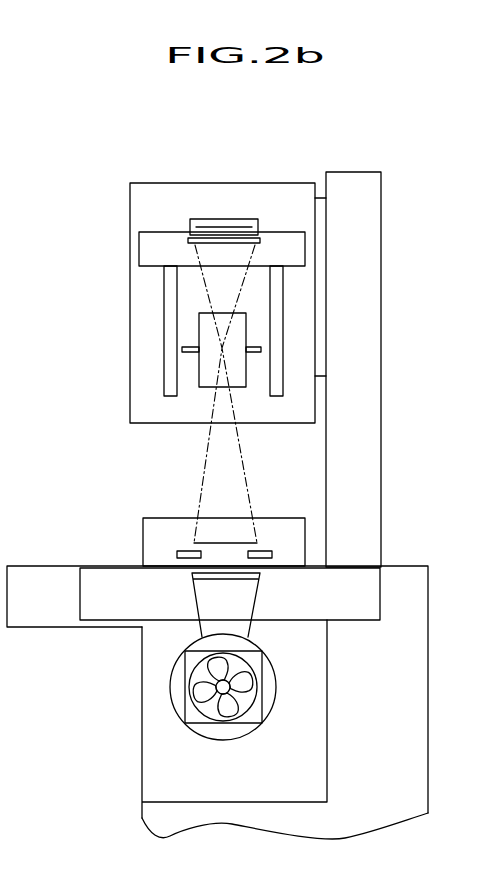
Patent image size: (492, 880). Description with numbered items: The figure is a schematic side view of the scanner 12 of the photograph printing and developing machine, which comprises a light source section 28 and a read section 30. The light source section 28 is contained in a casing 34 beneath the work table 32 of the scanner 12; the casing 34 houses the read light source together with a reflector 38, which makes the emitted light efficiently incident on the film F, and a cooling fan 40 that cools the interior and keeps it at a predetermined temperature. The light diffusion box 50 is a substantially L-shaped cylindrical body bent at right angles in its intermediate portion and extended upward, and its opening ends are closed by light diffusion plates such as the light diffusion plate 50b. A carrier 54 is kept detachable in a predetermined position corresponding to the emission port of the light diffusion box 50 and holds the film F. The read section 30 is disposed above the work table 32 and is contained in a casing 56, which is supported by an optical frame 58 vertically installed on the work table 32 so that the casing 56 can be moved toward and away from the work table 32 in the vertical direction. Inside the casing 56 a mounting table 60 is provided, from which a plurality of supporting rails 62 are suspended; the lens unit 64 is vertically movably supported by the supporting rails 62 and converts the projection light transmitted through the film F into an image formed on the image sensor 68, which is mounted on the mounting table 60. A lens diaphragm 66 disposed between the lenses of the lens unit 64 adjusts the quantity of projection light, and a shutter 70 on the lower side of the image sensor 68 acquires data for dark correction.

The scanner 12 is at (417, 158).
The light source section 28 is at (158, 778).
The read section 30 is at (145, 400).
The work table 32 is at (55, 563).
The casing 34 is at (318, 804).
The reflector 38 is at (270, 663).
The cooling fan 40 is at (255, 715).
The light diffusion box 50 is at (237, 600).
The light diffusion plate 50b is at (193, 590).
The carrier 54 is at (143, 518).
The casing 56 is at (130, 288).
The optical frame 58 is at (368, 270).
The mounting table 60 is at (140, 253).
The supporting rails 62 is at (164, 325).
The lens unit 64 is at (241, 387).
The lens diaphragm 66 is at (182, 350).
The image sensor 68 is at (228, 219).
The shutter 70 is at (260, 240).
The film F is at (194, 546).